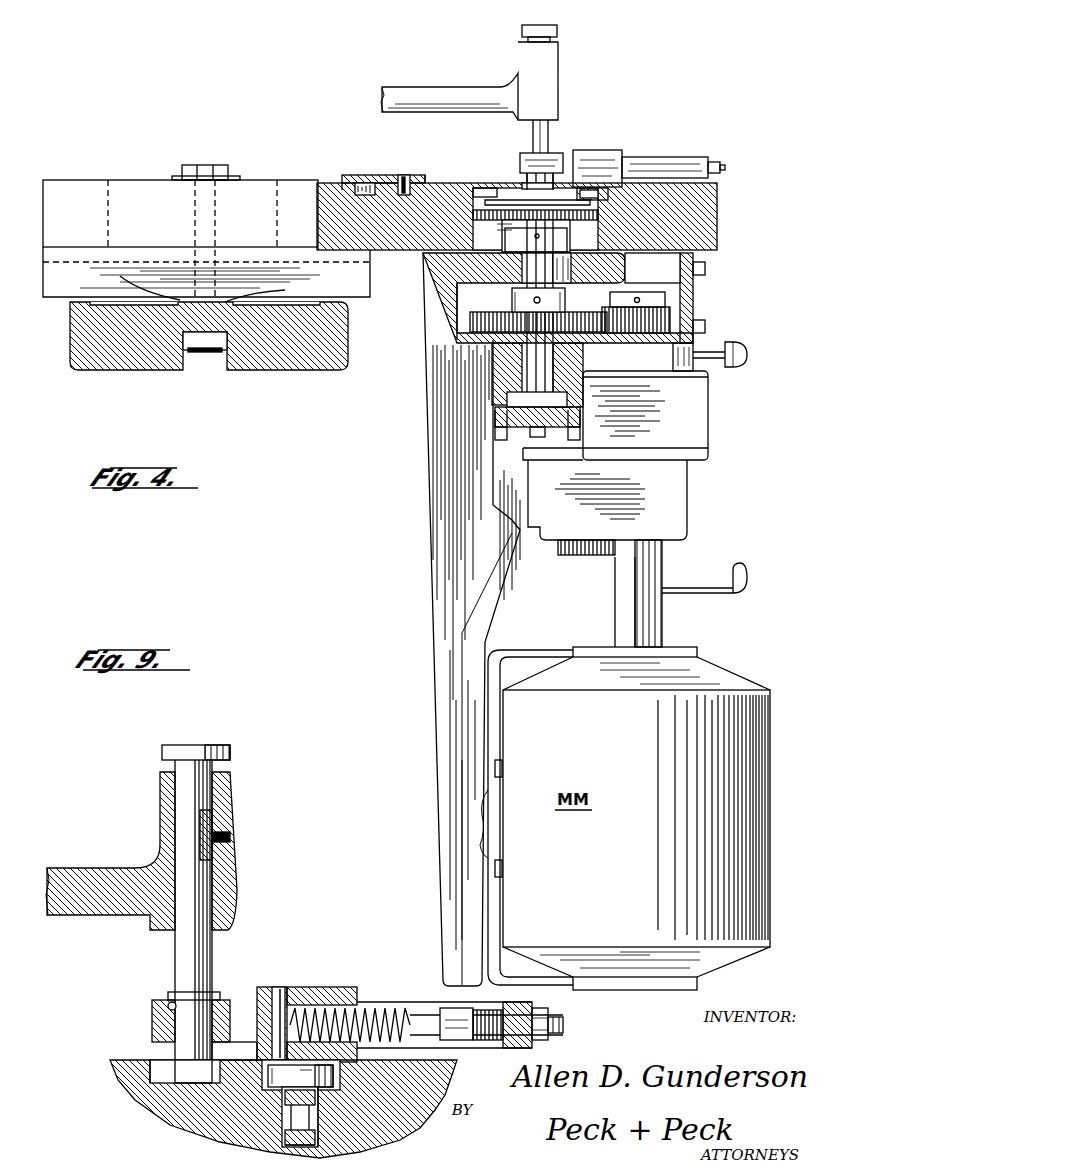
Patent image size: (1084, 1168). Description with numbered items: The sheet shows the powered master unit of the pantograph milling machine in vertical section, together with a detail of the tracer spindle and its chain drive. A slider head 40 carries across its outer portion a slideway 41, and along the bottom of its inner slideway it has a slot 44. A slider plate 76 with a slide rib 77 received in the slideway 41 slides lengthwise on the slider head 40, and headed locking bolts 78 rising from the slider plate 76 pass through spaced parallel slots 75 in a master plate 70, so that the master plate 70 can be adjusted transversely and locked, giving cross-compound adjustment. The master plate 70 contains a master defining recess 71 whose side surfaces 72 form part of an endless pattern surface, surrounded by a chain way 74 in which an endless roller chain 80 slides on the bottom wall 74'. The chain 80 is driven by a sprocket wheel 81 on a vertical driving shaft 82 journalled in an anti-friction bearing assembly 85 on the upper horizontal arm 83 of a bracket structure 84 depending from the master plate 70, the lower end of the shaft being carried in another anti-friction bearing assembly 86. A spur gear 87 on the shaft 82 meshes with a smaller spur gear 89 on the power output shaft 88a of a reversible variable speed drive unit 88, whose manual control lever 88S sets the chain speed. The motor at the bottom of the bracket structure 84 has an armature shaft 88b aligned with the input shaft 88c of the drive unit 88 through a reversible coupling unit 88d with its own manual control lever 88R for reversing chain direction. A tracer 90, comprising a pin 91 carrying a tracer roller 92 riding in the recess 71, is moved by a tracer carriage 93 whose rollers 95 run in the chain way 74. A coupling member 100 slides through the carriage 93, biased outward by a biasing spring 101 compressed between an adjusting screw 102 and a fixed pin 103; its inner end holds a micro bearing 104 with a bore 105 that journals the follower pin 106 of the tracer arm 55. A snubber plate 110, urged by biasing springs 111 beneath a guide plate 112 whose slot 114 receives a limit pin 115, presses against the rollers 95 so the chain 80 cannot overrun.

In FIG. 4, the slider head 40 is at (312, 372).
In FIG. 4, the slideway 41 is at (137, 281).
In FIG. 4, the slot 44 is at (228, 345).
In FIG. 4, the tracer arm 55 is at (398, 88).
In FIG. 9, the tracer arm 55 is at (62, 868).
In FIG. 4, the master plate 70 is at (717, 226).
In FIG. 9, the master plate 70 is at (122, 1086).
In FIG. 4, the master defining recess 71 is at (521, 186).
In FIG. 9, the master defining recess 71 is at (152, 1062).
In FIG. 4, the side surfaces 72 is at (505, 191).
In FIG. 9, the side surfaces 72 is at (150, 1074).
In FIG. 4, the chain way 74 is at (562, 262).
In FIG. 9, the chain way 74 is at (370, 1124).
In FIG. 9, the bottom wall 74' is at (256, 1152).
In FIG. 4, the slots 75 is at (277, 215).
In FIG. 4, the slider plate 76 is at (360, 295).
In FIG. 4, the slide rib 77 is at (258, 287).
In FIG. 4, the locking bolts 78 is at (203, 181).
In FIG. 4, the roller chain 80 is at (571, 238).
In FIG. 9, the roller chain 80 is at (291, 1118).
In FIG. 4, the sprocket wheel 81 is at (497, 227).
In FIG. 4, the driving shaft 82 is at (522, 274).
In FIG. 4, the upper horizontal arm 83 is at (626, 274).
In FIG. 4, the bracket structure 84 is at (446, 347).
In FIG. 4, the anti-friction bearing assembly 85 is at (571, 266).
In FIG. 4, the anti-friction bearing assembly 86 is at (515, 399).
In FIG. 4, the spur gear 87 is at (470, 333).
In FIG. 4, the variable speed drive unit 88 is at (692, 430).
In FIG. 4, the power output shaft 88a is at (670, 324).
In FIG. 4, the armature shaft 88b is at (662, 646).
In FIG. 4, the input shaft 88c is at (614, 566).
In FIG. 4, the reversible coupling unit 88d is at (635, 582).
In FIG. 4, the manual control lever 88R is at (738, 566).
In FIG. 4, the manual control lever 88S is at (748, 356).
In FIG. 4, the spur gear 89 is at (665, 301).
In FIG. 4, the tracer 90 is at (553, 143).
In FIG. 4, the pin 91 is at (567, 166).
In FIG. 9, the pin 91 is at (206, 969).
In FIG. 4, the tracer roller 92 is at (575, 188).
In FIG. 9, the tracer roller 92 is at (185, 1077).
In FIG. 4, the tracer carriage 93 is at (624, 156).
In FIG. 9, the tracer carriage 93 is at (312, 985).
In FIG. 9, the rollers 95 is at (334, 1078).
In FIG. 4, the coupling member 100 is at (690, 160).
In FIG. 9, the coupling member 100 is at (385, 1006).
In FIG. 9, the biasing spring 101 is at (342, 1018).
In FIG. 9, the adjusting screw 102 is at (550, 1022).
In FIG. 9, the pin 103 is at (285, 987).
In FIG. 9, the micro bearing 104 is at (156, 999).
In FIG. 9, the bore 105 is at (160, 1006).
In FIG. 4, the follower pin 106 is at (533, 129).
In FIG. 9, the follower pin 106 is at (185, 787).
In FIG. 4, the snubber plate 110 is at (430, 183).
In FIG. 4, the biasing springs 111 is at (342, 186).
In FIG. 4, the guide plate 112 is at (355, 178).
In FIG. 4, the slot 114 is at (372, 183).
In FIG. 4, the limit pin 115 is at (404, 176).